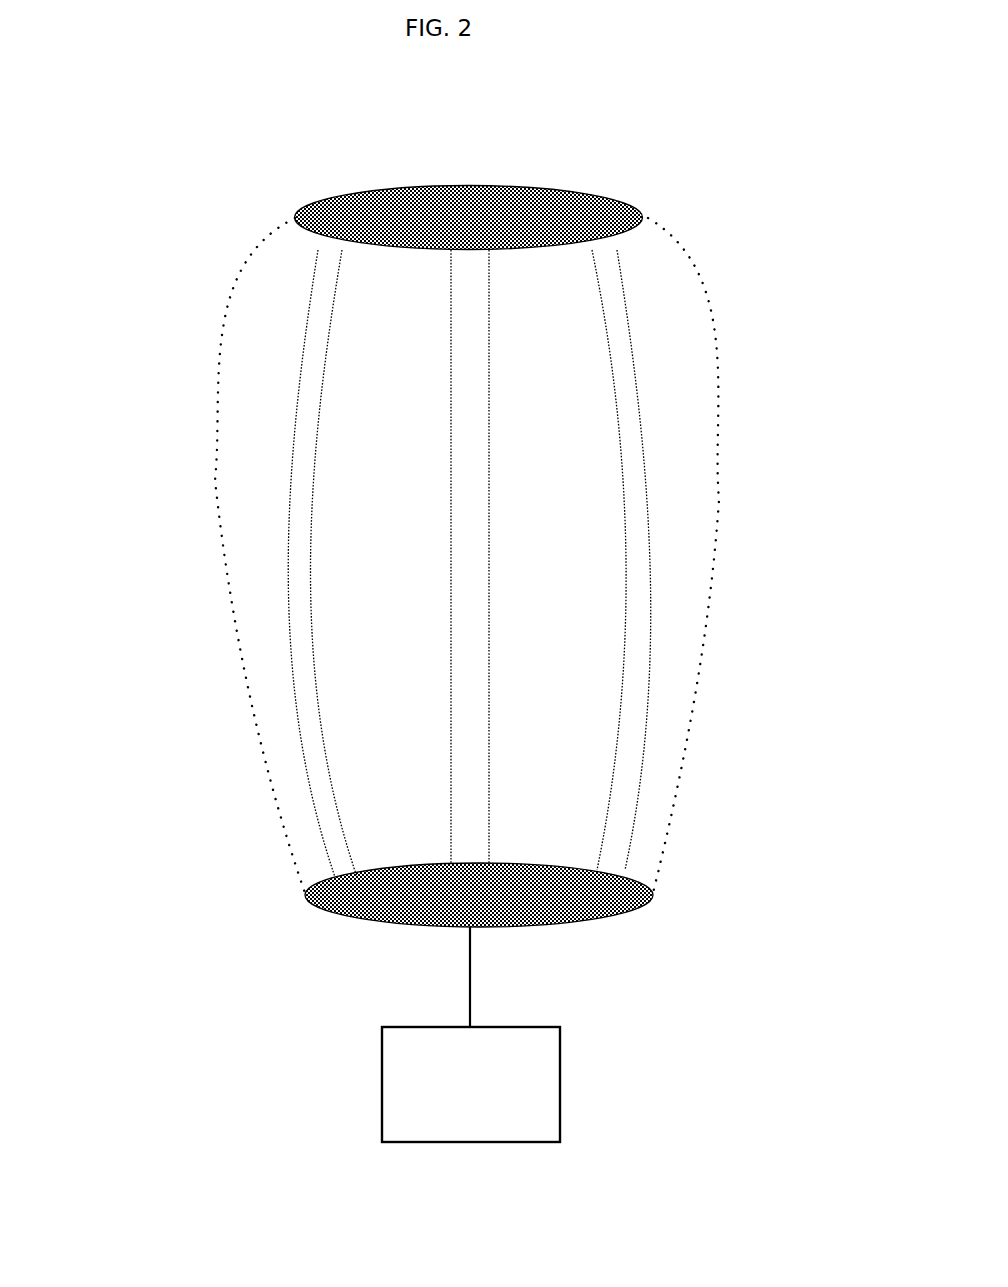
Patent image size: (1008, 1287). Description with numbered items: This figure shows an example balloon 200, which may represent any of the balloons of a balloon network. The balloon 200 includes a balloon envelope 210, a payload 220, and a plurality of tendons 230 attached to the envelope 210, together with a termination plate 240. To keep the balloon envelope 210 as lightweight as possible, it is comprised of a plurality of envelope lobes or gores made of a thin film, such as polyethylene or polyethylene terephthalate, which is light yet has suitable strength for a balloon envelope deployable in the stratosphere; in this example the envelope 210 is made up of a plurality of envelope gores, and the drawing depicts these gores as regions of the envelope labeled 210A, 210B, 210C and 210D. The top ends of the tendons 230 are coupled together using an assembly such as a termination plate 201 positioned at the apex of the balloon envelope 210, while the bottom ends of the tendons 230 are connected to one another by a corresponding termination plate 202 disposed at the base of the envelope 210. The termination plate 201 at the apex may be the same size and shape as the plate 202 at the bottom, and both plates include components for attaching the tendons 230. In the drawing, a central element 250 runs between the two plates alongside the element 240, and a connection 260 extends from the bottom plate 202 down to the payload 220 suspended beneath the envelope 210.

The balloon 200 is at (815, 40).
The termination plate 201 is at (620, 202).
The termination plate 202 is at (420, 915).
The balloon envelope 210 is at (718, 380).
The outer enclosure layer 210A is at (243, 603).
The left inner layer 210B is at (367, 682).
The right inner layer 210C is at (592, 703).
The outer enclosure layer 210D is at (693, 548).
The payload 220 is at (382, 1077).
The tendons 230 is at (330, 237).
The termination plate 240 is at (467, 247).
The central support 250 is at (593, 243).
The connection wire 260 is at (473, 988).